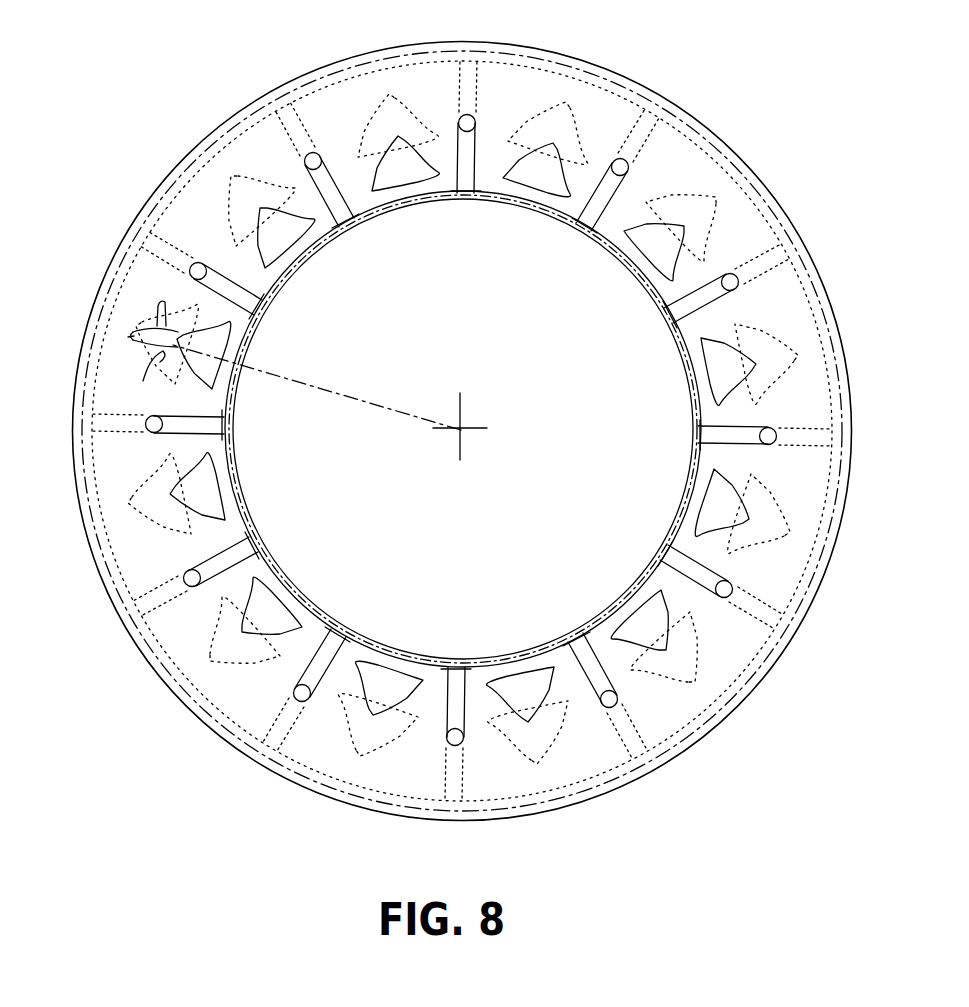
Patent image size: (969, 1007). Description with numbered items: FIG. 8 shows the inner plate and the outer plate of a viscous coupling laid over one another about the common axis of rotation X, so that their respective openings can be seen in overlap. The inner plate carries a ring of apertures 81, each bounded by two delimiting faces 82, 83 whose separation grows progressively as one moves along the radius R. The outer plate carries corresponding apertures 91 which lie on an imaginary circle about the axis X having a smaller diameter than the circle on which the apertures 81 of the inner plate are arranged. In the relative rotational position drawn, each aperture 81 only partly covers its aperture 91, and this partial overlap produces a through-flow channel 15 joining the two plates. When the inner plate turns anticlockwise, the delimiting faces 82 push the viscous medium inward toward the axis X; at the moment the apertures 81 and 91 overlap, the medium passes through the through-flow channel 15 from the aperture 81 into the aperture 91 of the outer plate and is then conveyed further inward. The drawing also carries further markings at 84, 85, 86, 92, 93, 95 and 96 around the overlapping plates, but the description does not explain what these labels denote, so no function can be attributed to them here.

The through-flow channel 15 is at (176, 322).
The aperture of the inner plate 81 is at (128, 337).
The delimiting face 82 is at (168, 320).
The delimiting face 83 is at (150, 358).
The tail portion of hold-down member 84 is at (133, 336).
The displaced position of triangular member 85 is at (222, 392).
The outer ring 86 is at (470, 78).
The aperture of the outer plate 91 is at (233, 352).
The outer edge of inner ring 92 is at (240, 338).
The triangular member 93 is at (213, 378).
The center line of inner ring 95 is at (245, 343).
The spoke with pin 96 is at (468, 163).
The radius R is at (403, 410).
The axis of rotation X is at (460, 428).